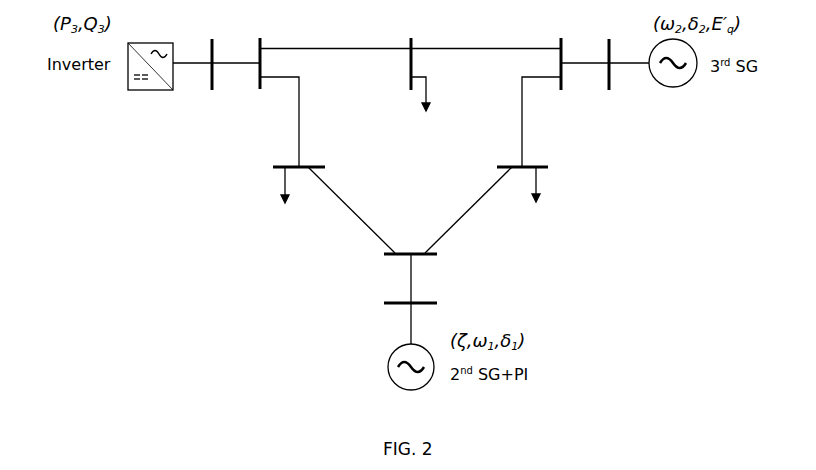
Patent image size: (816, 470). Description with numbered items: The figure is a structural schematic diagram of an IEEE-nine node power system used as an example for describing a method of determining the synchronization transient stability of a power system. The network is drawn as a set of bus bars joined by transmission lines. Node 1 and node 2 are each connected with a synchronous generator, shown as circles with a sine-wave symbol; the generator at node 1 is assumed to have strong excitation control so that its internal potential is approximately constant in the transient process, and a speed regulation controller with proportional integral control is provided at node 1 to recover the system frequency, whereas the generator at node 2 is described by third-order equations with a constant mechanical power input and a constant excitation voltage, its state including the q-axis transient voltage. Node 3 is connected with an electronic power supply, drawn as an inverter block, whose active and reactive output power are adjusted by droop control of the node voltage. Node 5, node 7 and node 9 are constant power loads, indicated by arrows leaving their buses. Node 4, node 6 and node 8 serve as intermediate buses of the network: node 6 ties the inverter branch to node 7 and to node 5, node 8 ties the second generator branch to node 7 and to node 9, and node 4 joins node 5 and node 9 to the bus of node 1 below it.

The node 1 is at (399, 304).
The node 2 is at (608, 50).
The node 3 is at (211, 50).
The node 4 is at (400, 255).
The node 5 is at (288, 179).
The node 6 is at (260, 49).
The node 7 is at (417, 60).
The node 8 is at (560, 50).
The node 9 is at (532, 179).